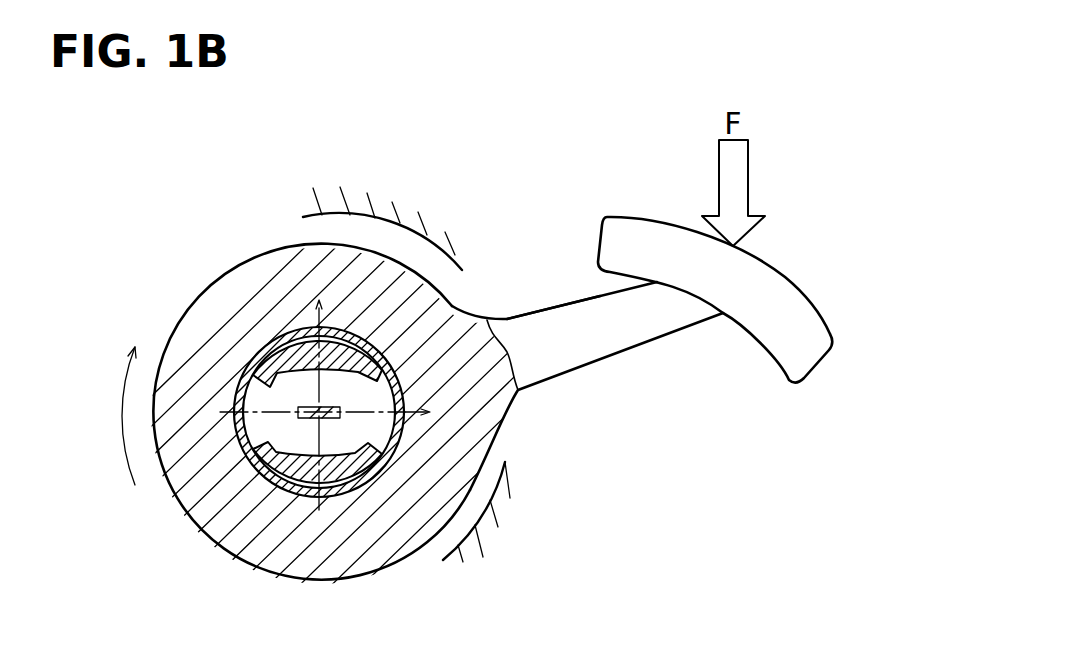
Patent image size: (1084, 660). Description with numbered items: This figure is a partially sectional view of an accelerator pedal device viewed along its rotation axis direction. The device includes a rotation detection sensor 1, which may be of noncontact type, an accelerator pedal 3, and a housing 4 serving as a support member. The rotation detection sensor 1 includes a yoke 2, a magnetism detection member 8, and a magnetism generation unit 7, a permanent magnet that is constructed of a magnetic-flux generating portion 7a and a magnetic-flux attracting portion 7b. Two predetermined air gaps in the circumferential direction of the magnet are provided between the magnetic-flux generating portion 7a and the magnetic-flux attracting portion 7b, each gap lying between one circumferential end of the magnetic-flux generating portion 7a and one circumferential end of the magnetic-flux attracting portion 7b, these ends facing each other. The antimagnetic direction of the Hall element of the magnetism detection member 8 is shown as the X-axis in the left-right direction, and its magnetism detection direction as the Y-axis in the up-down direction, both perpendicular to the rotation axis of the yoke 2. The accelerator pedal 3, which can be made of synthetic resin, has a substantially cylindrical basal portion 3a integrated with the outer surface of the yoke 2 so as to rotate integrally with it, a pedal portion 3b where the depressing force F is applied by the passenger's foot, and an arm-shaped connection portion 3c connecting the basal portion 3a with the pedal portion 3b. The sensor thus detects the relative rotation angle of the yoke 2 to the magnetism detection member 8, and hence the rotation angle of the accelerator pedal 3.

The rotation detection sensor 1 is at (243, 358).
The yoke 2 is at (348, 330).
The accelerator pedal 3 is at (633, 347).
The basal portion 3a is at (240, 275).
The pedal portion 3b is at (768, 275).
The connection portion 3c is at (547, 323).
The housing 4 is at (385, 217).
The magnetism generation unit 7 is at (371, 406).
The magnetic-flux generating portion 7a is at (377, 381).
The magnetic-flux attracting portion 7b is at (377, 443).
The magnetism detection member 8 is at (305, 397).